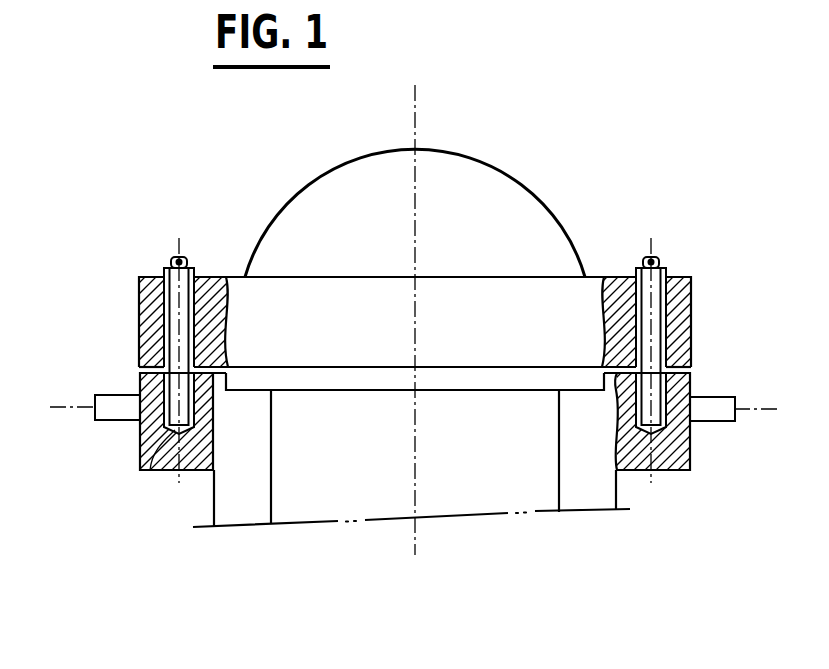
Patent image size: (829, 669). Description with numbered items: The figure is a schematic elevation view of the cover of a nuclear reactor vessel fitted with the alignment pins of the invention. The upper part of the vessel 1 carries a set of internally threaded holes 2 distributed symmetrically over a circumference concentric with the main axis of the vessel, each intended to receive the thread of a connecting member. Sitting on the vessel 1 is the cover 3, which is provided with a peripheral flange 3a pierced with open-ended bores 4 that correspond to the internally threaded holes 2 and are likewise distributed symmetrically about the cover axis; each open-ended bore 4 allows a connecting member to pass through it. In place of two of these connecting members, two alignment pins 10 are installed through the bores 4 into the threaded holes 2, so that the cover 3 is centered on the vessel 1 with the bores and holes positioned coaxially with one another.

The vessel 1 is at (665, 475).
The internally threaded holes 2 is at (141, 474).
The cover 3 is at (543, 199).
The peripheral flange 3a is at (150, 297).
The open-ended bores 4 is at (666, 308).
The alignment pins 10 is at (164, 255).